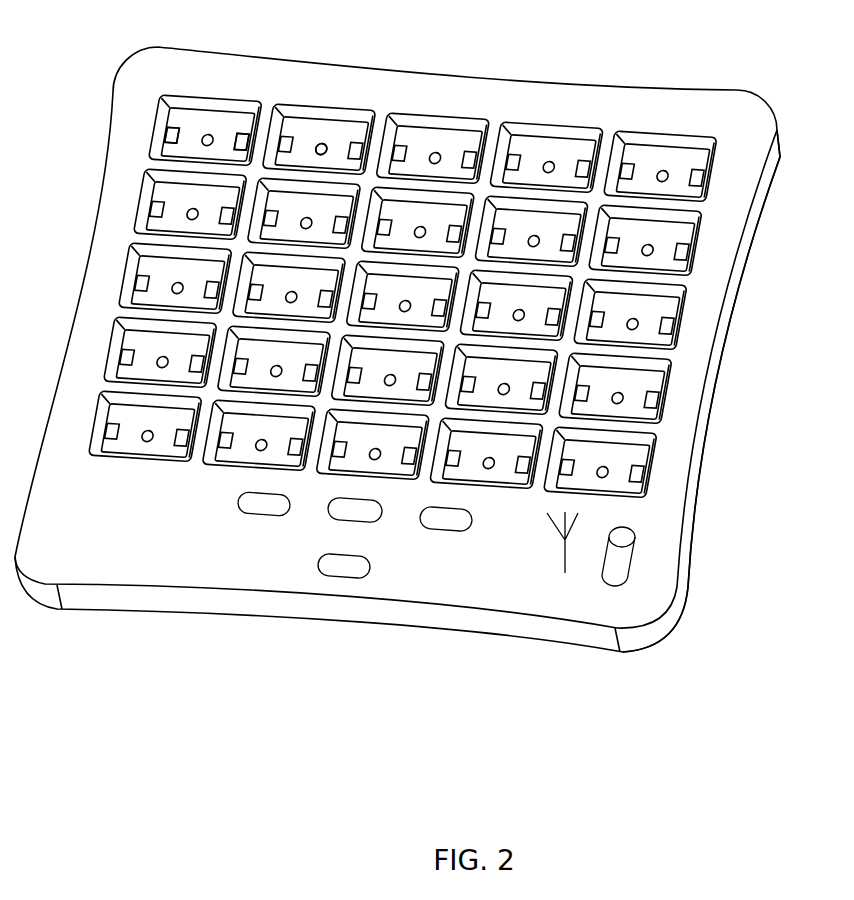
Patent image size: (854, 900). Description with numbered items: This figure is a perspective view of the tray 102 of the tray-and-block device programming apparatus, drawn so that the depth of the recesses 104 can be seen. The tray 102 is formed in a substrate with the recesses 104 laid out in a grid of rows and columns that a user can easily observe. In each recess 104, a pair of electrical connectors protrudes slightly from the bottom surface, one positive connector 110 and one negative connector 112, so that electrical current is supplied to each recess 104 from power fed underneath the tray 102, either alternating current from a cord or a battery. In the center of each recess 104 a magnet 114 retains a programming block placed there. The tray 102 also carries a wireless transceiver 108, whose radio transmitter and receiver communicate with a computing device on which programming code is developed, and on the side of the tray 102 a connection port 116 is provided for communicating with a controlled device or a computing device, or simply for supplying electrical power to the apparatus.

The tray 102 is at (553, 87).
The recess 104 is at (160, 120).
The wireless transceiver 108 is at (568, 572).
The connector 110 is at (177, 127).
The connector 112 is at (248, 134).
The magnet 114 is at (325, 143).
The connection port 116 is at (682, 538).